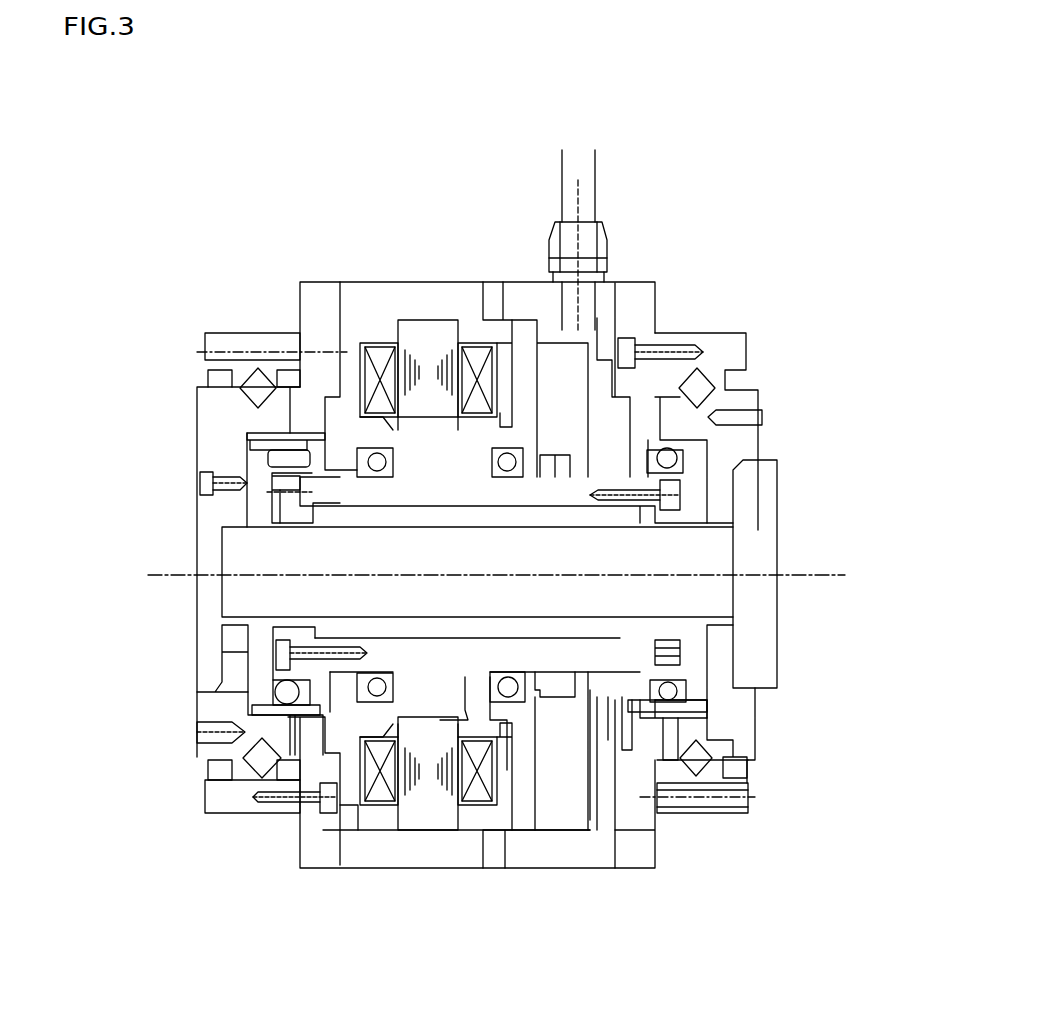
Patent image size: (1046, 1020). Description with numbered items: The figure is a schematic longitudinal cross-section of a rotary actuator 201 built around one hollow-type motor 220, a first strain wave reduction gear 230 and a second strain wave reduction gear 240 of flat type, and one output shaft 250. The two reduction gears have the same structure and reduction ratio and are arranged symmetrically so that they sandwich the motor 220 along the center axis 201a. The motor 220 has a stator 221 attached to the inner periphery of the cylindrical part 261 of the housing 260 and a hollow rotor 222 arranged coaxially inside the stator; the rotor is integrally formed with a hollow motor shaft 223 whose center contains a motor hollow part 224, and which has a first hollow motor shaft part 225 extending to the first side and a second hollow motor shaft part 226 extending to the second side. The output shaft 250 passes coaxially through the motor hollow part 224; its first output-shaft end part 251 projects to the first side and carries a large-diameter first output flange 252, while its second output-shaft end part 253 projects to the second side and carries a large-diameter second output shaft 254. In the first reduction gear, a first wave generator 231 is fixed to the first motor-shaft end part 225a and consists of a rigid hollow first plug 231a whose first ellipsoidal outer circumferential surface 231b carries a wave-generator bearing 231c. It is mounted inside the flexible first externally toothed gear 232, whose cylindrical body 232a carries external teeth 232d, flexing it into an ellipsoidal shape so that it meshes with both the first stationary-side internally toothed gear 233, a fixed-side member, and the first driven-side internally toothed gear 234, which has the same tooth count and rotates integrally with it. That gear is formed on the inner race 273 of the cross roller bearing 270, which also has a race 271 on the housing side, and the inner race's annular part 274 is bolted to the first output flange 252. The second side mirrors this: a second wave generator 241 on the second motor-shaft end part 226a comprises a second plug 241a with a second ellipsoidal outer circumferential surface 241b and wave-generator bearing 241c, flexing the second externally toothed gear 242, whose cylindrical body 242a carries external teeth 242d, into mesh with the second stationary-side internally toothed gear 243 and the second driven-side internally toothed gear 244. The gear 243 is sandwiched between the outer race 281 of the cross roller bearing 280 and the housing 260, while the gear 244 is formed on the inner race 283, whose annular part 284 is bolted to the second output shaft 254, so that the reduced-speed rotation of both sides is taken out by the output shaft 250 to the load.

The rotary actuator 201 is at (322, 190).
The center axis 201a is at (808, 562).
The hollow-type motor 220 is at (442, 262).
The stator 221 is at (457, 840).
The hollow rotor 222 is at (485, 748).
The hollow motor shaft 223 is at (600, 652).
The motor hollow part 224 is at (563, 723).
The first hollow motor shaft part 225 is at (388, 805).
The first motor-shaft end part 225a is at (378, 760).
The second hollow motor shaft part 226 is at (612, 700).
The second motor-shaft end part 226a is at (638, 725).
The first strain wave reduction gear 230 is at (240, 305).
The first wave generator 231 is at (58, 672).
The first plug 231a is at (255, 627).
The first ellipsoidal outer circumferential surface 231b is at (270, 678).
The wave-generator bearing 231c is at (252, 715).
The first externally toothed gear 232 is at (100, 398).
The cylindrical body 232a is at (275, 447).
The external teeth 232d is at (275, 425).
The first stationary-side internally toothed gear 233 is at (290, 740).
The first driven-side internally toothed gear 234 is at (275, 755).
The second strain wave reduction gear 240 is at (703, 308).
The second wave generator 241 is at (858, 664).
The second plug 241a is at (685, 646).
The second ellipsoidal outer circumferential surface 241b is at (690, 689).
The wave-generator bearing 241c is at (700, 707).
The second externally toothed gear 242 is at (868, 395).
The cylindrical body 242a is at (690, 456).
The external teeth 242d is at (725, 420).
The second stationary-side internally toothed gear 243 is at (670, 760).
The second driven-side internally toothed gear 244 is at (680, 745).
The output shaft 250 is at (488, 515).
The first output-shaft end part 251 is at (262, 566).
The first output flange 252 is at (193, 500).
The second output-shaft end part 253 is at (680, 582).
The second output shaft 254 is at (782, 504).
The housing 260 is at (386, 272).
The cylindrical part 261 is at (452, 870).
The cross roller bearing 270 is at (94, 842).
The brake bearing 271 is at (240, 780).
The inner race 273 is at (218, 752).
The annular part 274 is at (232, 499).
The cross roller bearing 280 is at (855, 788).
The outer race 281 is at (712, 782).
The inner race 283 is at (724, 749).
The annular part 284 is at (720, 483).